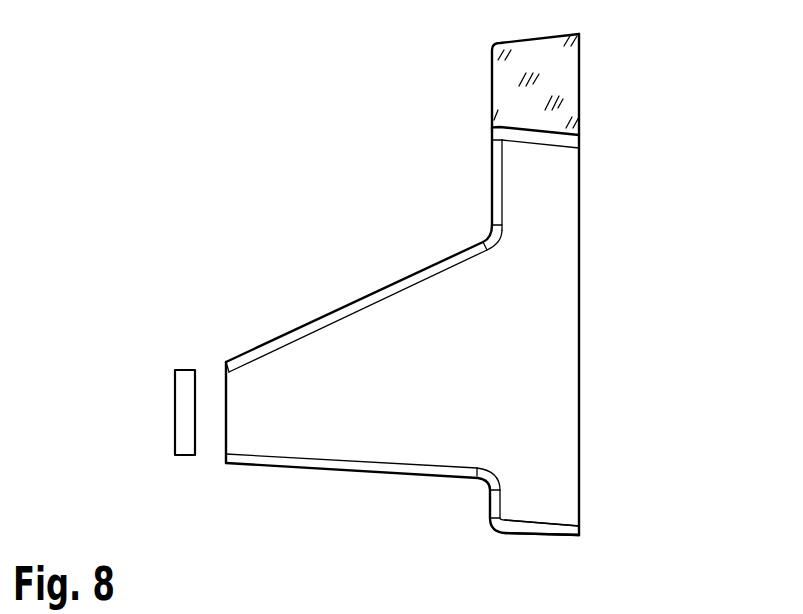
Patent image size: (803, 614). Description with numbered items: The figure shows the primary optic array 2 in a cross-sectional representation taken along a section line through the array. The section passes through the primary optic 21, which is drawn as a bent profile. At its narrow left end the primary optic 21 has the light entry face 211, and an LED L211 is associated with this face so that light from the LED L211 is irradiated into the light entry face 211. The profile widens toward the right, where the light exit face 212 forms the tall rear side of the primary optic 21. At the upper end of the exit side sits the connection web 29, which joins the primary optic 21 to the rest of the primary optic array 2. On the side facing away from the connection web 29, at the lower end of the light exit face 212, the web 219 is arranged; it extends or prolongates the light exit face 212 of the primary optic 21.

The primary optic array 2 is at (622, 216).
The primary optic 21 is at (380, 322).
The light entry face 211 is at (226, 388).
The light exit face 212 is at (582, 333).
The web 219 is at (532, 510).
The connection web 29 is at (508, 92).
The LED L211 is at (183, 415).